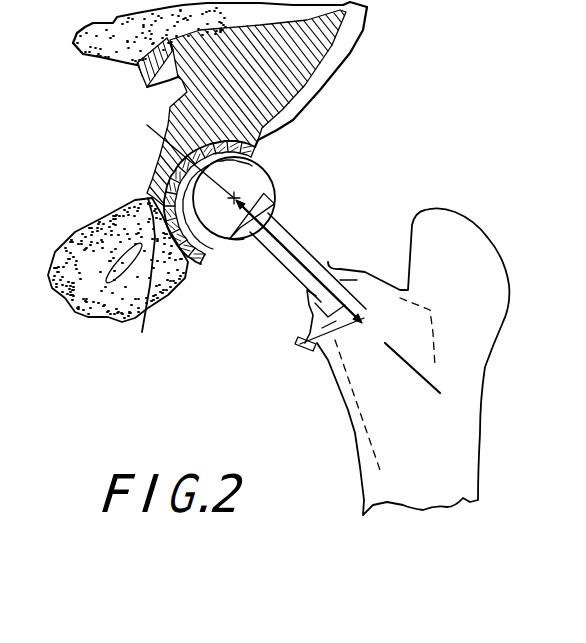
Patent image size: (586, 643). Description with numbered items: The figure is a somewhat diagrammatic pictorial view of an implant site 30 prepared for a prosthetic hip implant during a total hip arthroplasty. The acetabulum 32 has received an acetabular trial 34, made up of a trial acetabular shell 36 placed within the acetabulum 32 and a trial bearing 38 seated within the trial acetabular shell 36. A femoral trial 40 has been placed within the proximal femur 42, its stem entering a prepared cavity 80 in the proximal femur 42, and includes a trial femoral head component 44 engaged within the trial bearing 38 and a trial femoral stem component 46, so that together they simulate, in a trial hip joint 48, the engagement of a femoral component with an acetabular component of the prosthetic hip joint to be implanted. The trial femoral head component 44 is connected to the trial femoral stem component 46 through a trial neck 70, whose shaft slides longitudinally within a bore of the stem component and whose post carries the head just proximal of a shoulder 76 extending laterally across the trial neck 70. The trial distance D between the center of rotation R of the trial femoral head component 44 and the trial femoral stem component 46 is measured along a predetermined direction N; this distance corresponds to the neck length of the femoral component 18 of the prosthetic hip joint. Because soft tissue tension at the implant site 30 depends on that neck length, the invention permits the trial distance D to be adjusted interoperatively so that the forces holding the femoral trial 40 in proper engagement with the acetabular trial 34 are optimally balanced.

The implant site 30 is at (152, 155).
The acetabulum 32 is at (268, 142).
The acetabular trial 34 is at (197, 276).
The trial acetabular shell 36 is at (142, 332).
The trial bearing 38 is at (183, 192).
The femoral trial 40 is at (302, 349).
The proximal femur 42 is at (470, 430).
The trial femoral head component 44 is at (268, 153).
The trial femoral stem component 46 is at (430, 310).
The trial hip joint 48 is at (314, 221).
The femoral component 18 is at (252, 231).
The trial neck 70 is at (266, 268).
The shoulder 76 is at (275, 204).
The prepared cavity 80 is at (367, 422).
The trial distance D is at (314, 247).
The center of rotation R is at (236, 189).
The predetermined direction N is at (397, 357).